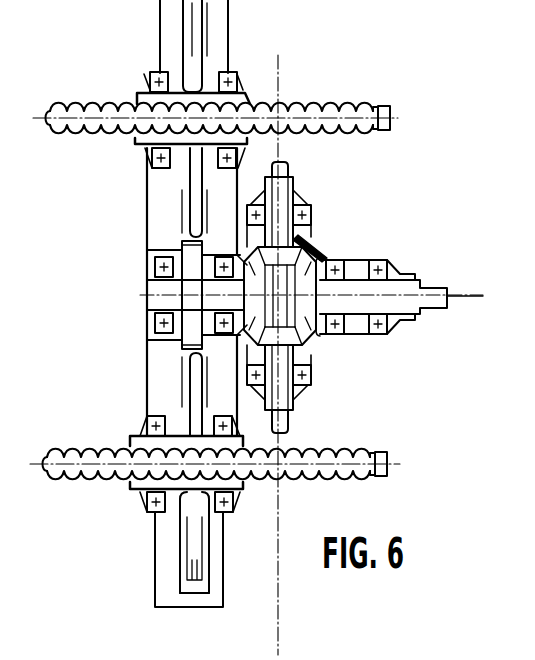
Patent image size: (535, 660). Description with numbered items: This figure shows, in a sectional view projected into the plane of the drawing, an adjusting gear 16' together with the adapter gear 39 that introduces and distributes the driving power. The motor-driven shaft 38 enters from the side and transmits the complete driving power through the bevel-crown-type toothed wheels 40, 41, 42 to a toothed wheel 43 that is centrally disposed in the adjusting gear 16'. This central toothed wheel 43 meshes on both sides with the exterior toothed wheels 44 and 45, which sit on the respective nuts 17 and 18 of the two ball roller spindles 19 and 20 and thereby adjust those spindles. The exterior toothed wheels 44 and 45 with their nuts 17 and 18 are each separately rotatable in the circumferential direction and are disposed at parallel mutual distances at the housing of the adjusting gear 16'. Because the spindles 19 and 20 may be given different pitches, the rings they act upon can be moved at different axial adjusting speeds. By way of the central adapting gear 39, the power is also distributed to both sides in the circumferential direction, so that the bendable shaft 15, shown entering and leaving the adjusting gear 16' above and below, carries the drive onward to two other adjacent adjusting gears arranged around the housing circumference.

The bendable shaft 15 is at (290, 165).
The adjusting gear 16' is at (145, 308).
The nut 17 is at (138, 98).
The nut 18 is at (232, 490).
The ball roller spindle 19 is at (363, 118).
The ball roller spindle 20 is at (82, 472).
The motor-driven shaft 38 is at (420, 290).
The adapter gear 39 is at (331, 349).
The bevel-crown-type toothed wheel 40 is at (326, 262).
The bevel-crown-type toothed wheel 41 is at (182, 250).
The bevel-crown-type toothed wheel 42 is at (305, 242).
The toothed wheel 43 is at (182, 333).
The toothed wheel 44 is at (200, 36).
The toothed wheel 45 is at (183, 568).